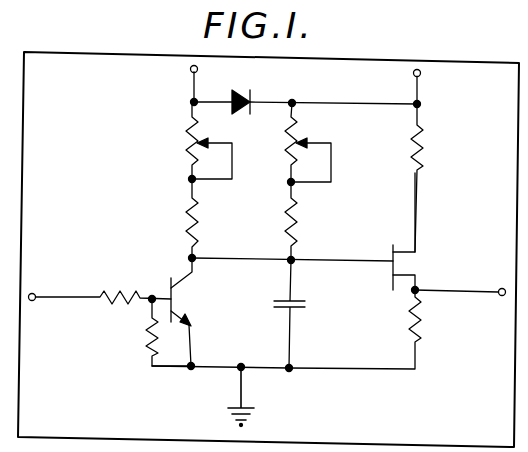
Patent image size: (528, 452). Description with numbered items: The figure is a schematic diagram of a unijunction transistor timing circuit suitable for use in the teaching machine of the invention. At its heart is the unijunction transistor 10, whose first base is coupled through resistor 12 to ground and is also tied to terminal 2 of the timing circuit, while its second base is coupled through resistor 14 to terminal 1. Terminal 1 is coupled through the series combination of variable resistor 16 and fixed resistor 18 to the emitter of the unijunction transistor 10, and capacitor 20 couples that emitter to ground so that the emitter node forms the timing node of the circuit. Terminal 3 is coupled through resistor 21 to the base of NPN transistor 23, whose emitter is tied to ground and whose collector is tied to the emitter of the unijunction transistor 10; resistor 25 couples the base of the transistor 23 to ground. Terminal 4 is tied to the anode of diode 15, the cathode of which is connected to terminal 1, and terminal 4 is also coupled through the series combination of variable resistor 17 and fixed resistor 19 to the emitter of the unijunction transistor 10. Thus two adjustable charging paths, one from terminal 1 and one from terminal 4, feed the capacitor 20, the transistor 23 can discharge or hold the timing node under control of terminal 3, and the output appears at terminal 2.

The terminal 1 is at (412, 84).
The terminal 2 is at (461, 282).
The terminal 3 is at (32, 312).
The terminal 4 is at (184, 81).
The unijunction transistor 10 is at (392, 250).
The resistor 12 is at (406, 320).
The resistor 14 is at (408, 148).
The diode 15 is at (247, 92).
The variable resistor 16 is at (287, 153).
The variable resistor 17 is at (187, 131).
The fixed resistor 18 is at (283, 222).
The fixed resistor 19 is at (183, 219).
The capacitor 20 is at (283, 299).
The resistor 21 is at (117, 292).
The NPN transistor 23 is at (170, 285).
The resistor 25 is at (147, 328).